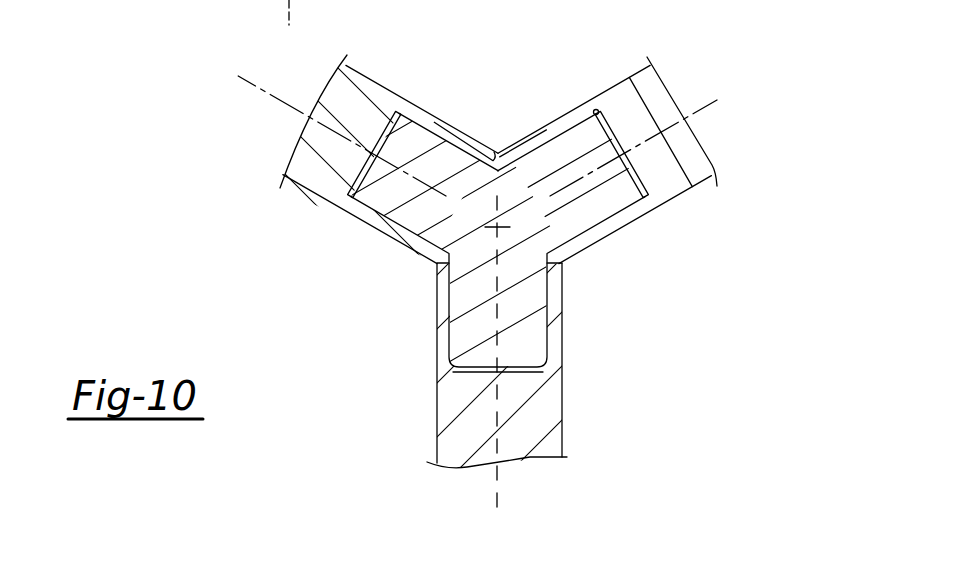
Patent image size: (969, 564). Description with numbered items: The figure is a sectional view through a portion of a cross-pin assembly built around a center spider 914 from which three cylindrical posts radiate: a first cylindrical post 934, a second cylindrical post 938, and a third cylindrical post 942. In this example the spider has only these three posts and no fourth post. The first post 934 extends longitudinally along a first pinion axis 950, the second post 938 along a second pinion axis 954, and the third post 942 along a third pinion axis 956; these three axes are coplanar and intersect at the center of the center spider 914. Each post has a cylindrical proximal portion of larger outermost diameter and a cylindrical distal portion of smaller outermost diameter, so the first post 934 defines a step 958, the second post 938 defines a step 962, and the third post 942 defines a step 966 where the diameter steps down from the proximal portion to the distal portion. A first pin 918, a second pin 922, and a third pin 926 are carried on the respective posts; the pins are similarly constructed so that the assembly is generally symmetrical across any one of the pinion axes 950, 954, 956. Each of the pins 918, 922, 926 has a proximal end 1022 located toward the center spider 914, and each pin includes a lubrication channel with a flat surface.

The center spider 914 is at (460, 213).
The first pin 918 is at (317, 193).
The second pin 922 is at (688, 179).
The third pin 926 is at (460, 445).
The first cylindrical post 934 is at (405, 143).
The second cylindrical post 938 is at (592, 130).
The third cylindrical post 942 is at (513, 345).
The first pinion axis 950 is at (263, 91).
The second pinion axis 954 is at (717, 100).
The third pinion axis 956 is at (498, 490).
The step 958 is at (440, 262).
The step 962 is at (507, 160).
The step 966 is at (552, 268).
The proximal end 1022 is at (472, 152).